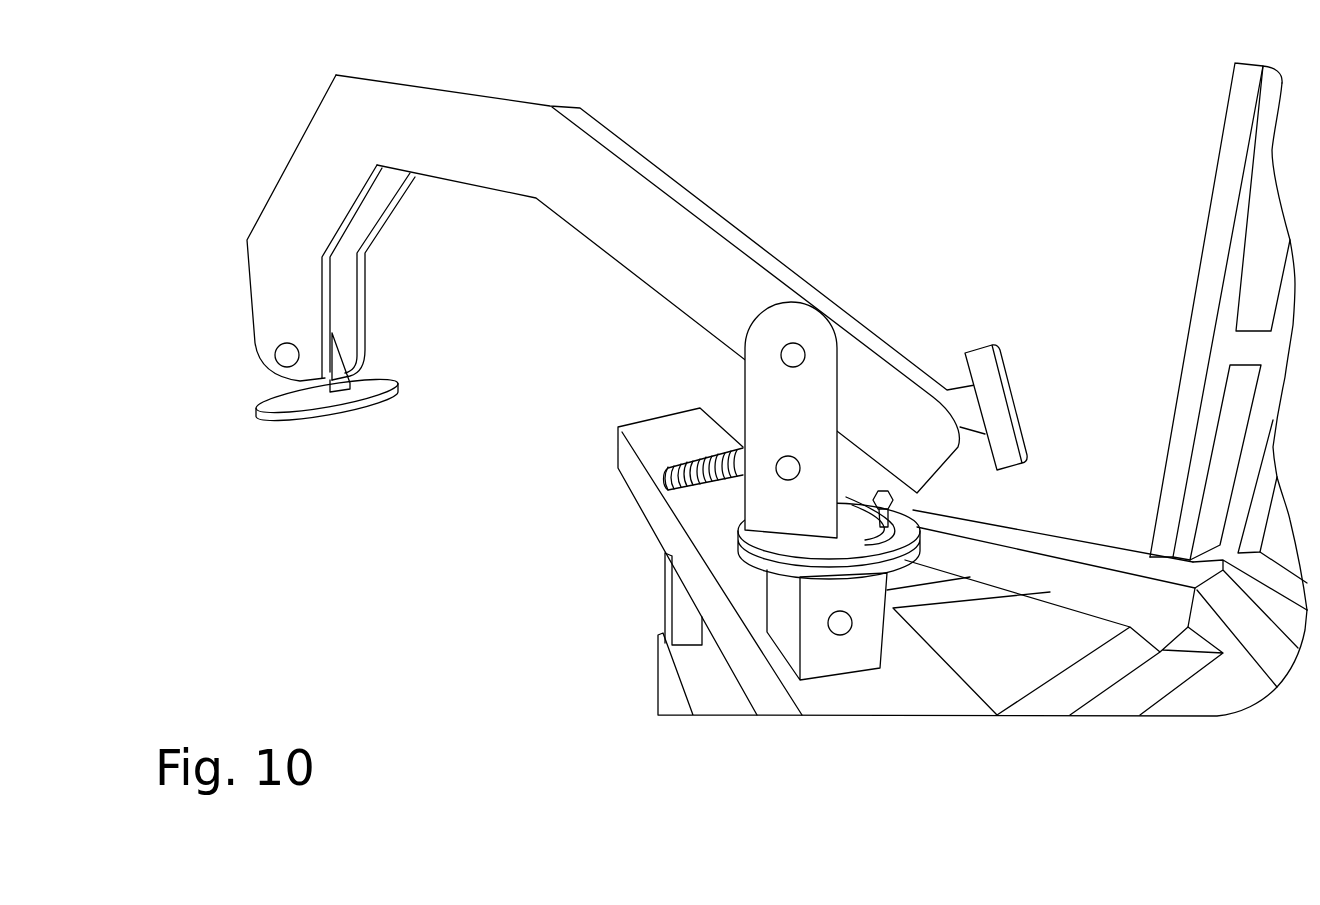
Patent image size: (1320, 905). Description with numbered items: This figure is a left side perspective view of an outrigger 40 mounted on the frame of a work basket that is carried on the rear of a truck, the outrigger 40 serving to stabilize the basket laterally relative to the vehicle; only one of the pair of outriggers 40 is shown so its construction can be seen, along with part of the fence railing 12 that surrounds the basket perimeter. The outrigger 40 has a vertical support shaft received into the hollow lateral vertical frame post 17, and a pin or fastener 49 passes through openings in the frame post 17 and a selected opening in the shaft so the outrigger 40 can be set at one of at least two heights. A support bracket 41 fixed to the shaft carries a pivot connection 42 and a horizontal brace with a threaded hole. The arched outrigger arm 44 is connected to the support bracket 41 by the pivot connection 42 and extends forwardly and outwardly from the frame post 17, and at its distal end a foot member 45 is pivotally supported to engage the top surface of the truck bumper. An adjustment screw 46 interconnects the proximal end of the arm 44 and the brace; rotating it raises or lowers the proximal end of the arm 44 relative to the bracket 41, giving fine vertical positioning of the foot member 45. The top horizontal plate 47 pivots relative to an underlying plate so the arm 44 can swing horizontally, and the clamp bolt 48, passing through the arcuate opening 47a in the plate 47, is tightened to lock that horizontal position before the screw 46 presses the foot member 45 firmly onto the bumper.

The outrigger 40 is at (908, 92).
The fence railing 12 is at (1226, 180).
The arched outrigger arm 44 is at (606, 130).
The foot member 45 is at (331, 413).
The support bracket 41 is at (775, 415).
The pivot connection 42 is at (807, 342).
The adjustment screw 46 is at (1003, 363).
The top horizontal plate 47 is at (807, 547).
The arcuate opening 47a is at (897, 522).
The clamp bolt 48 is at (898, 491).
The lateral vertical frame post 17 is at (795, 609).
The pin or fastener 49 is at (846, 635).